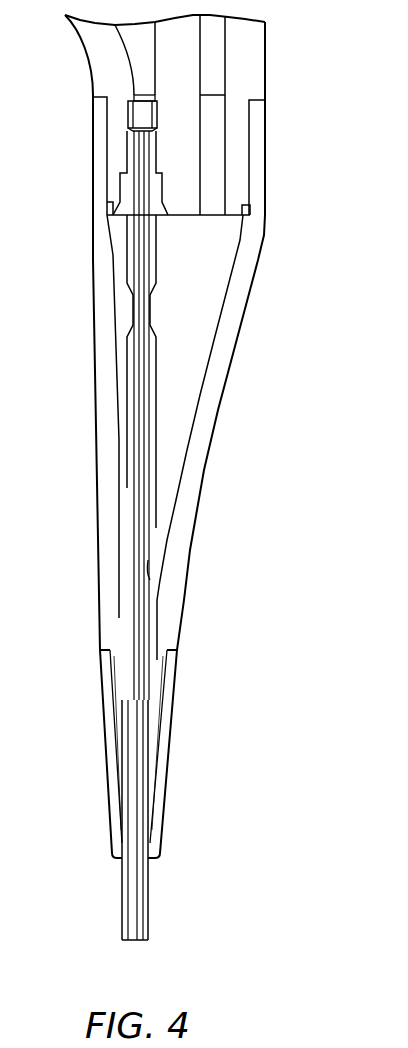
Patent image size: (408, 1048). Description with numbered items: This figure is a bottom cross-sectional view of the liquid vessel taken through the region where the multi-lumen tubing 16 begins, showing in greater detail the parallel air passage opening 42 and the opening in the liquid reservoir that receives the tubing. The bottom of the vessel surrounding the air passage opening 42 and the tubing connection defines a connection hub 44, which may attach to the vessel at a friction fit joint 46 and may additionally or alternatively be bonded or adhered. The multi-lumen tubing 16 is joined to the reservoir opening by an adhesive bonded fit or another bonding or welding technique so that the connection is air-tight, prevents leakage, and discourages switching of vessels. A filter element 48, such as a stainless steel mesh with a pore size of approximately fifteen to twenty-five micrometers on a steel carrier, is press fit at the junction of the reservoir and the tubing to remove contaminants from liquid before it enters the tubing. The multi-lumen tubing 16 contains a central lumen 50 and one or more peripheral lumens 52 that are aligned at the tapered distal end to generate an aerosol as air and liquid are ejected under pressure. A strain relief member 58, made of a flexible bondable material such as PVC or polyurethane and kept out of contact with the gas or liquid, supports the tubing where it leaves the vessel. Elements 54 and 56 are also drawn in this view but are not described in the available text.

The multi-lumen tubing 16 is at (148, 437).
The air passage opening 42 is at (213, 216).
The connection hub 44 is at (95, 322).
The friction fit joint 46 is at (249, 142).
The filter element 48 is at (131, 128).
The central lumen 50 is at (126, 928).
The peripheral lumens 52 is at (146, 922).
The crimp tube 54 is at (152, 325).
The crimp region 56 is at (148, 573).
The strain relief member 58 is at (163, 828).